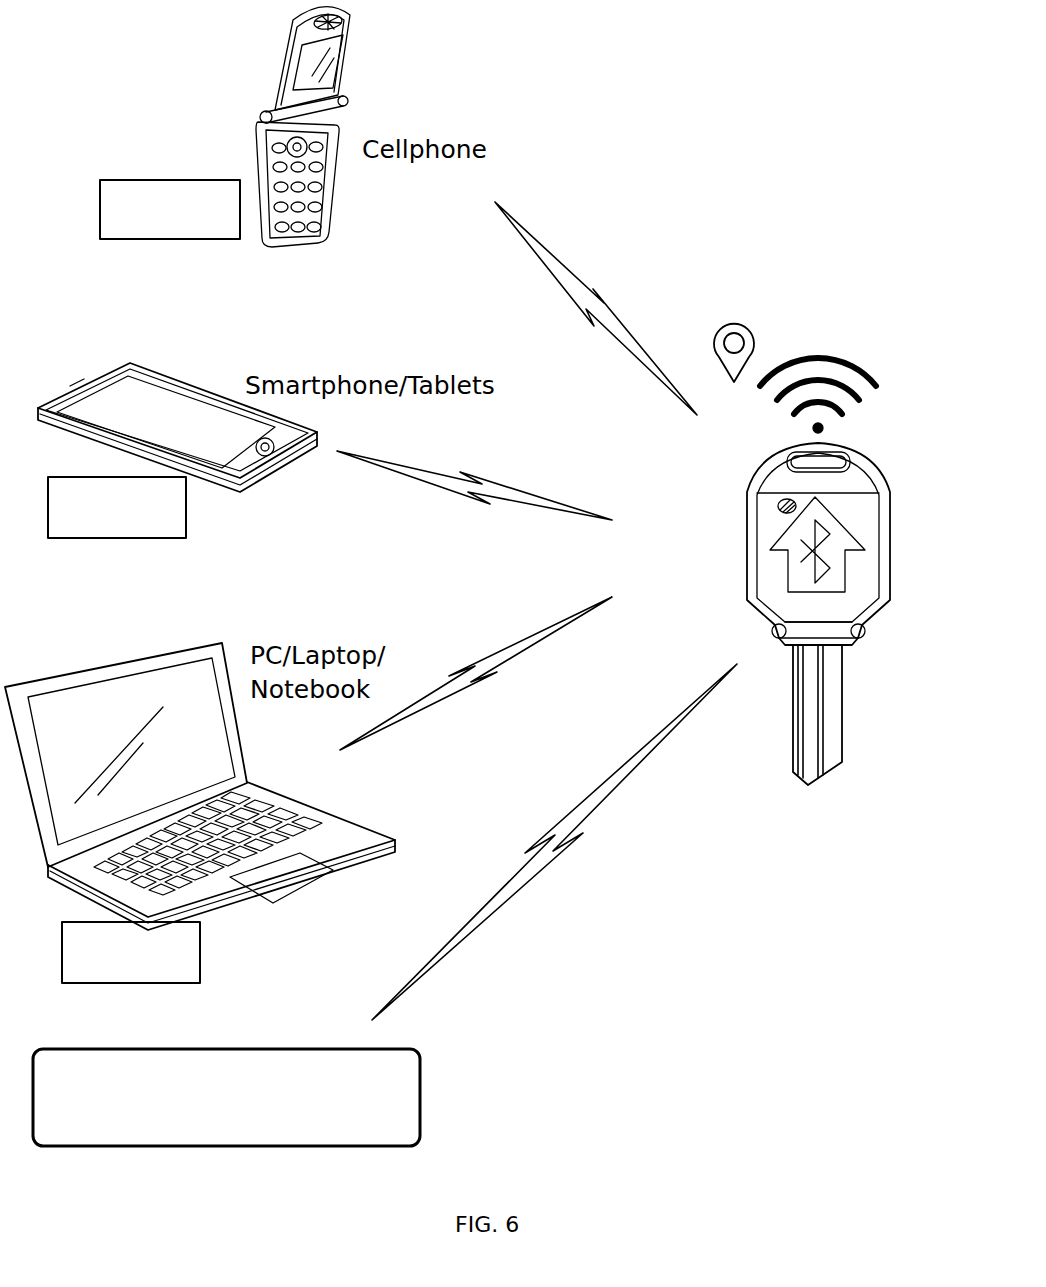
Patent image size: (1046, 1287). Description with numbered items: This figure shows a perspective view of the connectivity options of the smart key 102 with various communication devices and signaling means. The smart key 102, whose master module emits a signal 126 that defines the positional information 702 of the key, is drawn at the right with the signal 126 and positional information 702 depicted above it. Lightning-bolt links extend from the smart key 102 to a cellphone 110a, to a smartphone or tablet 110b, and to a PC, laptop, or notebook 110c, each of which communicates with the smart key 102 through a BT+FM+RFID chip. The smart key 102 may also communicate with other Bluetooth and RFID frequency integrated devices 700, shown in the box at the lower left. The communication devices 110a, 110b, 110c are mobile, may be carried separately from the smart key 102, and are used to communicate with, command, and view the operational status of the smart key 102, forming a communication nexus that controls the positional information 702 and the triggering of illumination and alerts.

The cellphone 110a is at (287, 70).
The smartphone or tablet 110b is at (100, 372).
The PC, laptop, or notebook 110c is at (130, 665).
The smart key 102 is at (877, 484).
The signal 126 is at (815, 352).
The positional information 702 is at (732, 323).
The other Bluetooth and RFID frequency integrated devices 700 is at (415, 1110).